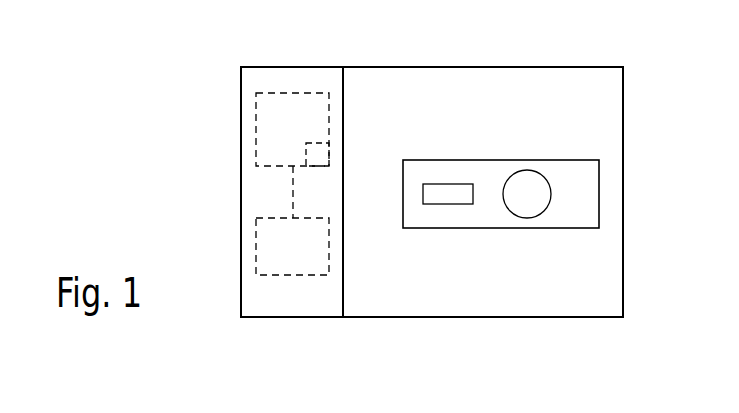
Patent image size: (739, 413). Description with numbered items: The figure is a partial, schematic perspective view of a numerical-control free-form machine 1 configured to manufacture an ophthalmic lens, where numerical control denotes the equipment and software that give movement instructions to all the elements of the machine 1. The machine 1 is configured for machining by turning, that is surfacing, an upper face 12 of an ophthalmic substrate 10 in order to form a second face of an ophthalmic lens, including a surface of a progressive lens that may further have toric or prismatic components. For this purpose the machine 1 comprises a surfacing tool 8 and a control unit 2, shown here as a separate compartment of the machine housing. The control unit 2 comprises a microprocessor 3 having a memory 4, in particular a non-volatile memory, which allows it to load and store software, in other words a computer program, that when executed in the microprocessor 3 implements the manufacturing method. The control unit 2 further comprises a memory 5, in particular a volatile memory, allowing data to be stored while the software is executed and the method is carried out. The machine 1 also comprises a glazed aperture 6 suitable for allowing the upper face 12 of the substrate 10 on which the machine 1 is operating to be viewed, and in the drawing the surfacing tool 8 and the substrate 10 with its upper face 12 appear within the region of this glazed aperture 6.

The free-form machine 1 is at (623, 138).
The control unit 2 is at (252, 305).
The microprocessor 3 is at (257, 138).
The memory 4 is at (318, 157).
The memory 5 is at (258, 238).
The glazed aperture 6 is at (599, 200).
The surfacing tool 8 is at (449, 195).
The ophthalmic substrate 10 is at (530, 215).
The upper face 12 is at (513, 205).